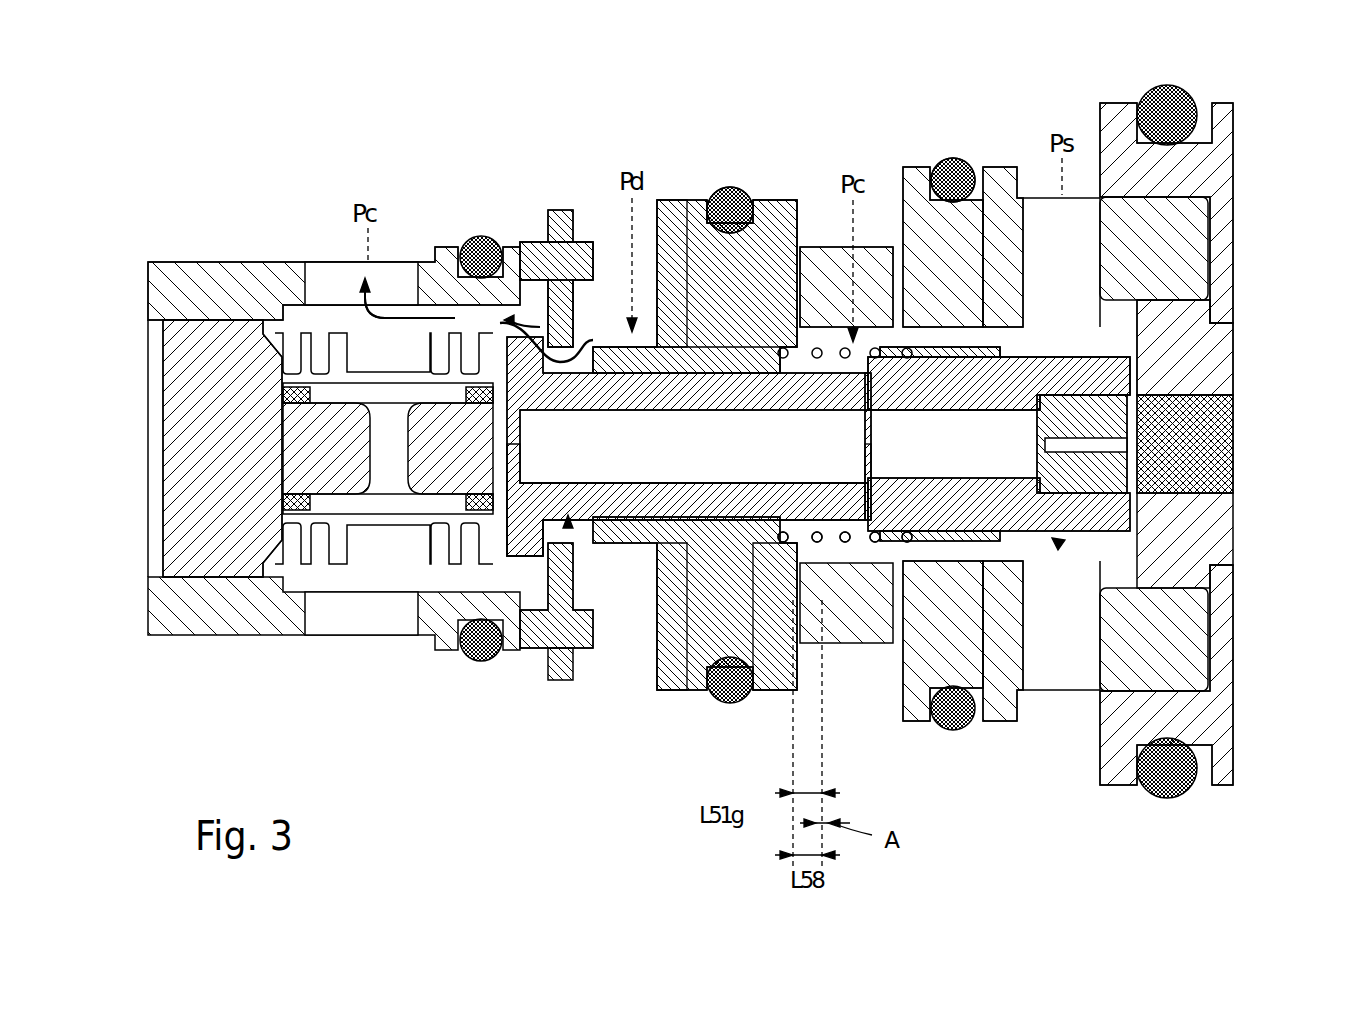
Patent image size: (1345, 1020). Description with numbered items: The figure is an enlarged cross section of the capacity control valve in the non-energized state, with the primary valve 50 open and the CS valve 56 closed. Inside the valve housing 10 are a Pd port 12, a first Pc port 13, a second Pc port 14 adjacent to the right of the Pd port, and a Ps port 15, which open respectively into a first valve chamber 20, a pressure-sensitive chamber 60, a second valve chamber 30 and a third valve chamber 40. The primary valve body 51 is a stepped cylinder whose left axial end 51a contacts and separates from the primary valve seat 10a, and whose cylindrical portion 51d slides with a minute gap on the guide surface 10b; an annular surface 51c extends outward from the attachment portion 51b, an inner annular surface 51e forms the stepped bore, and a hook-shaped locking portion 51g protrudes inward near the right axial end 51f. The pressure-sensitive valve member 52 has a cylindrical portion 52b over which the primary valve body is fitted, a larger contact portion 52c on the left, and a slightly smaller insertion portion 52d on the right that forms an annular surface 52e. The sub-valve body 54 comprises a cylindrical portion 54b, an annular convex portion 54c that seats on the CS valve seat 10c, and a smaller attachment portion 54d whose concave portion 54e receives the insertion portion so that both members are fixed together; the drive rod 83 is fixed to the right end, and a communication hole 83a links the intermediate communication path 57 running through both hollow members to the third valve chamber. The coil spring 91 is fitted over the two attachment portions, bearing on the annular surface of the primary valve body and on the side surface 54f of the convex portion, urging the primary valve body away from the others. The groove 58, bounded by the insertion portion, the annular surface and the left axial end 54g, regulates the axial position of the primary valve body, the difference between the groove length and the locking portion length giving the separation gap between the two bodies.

The valve housing 10 is at (222, 260).
The primary valve seat 10a is at (545, 240).
The guide surface 10b is at (733, 187).
The CS valve seat 10c is at (974, 178).
The Pd port 12 is at (652, 240).
The first Pc port 13 is at (263, 306).
The second Pc port 14 is at (890, 250).
The Ps port 15 is at (1040, 235).
The first valve chamber 20 is at (612, 290).
The second valve chamber 30 is at (840, 247).
The third valve chamber 40 is at (1080, 337).
The primary valve 50 is at (611, 82).
The primary valve body 51 is at (625, 610).
The left axial end 51a is at (573, 300).
The attachment portion 51b is at (785, 330).
The annular surface 51c is at (745, 300).
The cylindrical portion 51d is at (698, 300).
The annular surface 51e is at (762, 392).
The right axial end 51f is at (790, 577).
The locking portion 51g is at (735, 600).
The pressure-sensitive valve member 52 is at (560, 605).
The cylindrical portion 52b is at (660, 600).
The contact portion 52c is at (515, 558).
The insertion portion 52d is at (830, 560).
The annular surface 52e is at (873, 430).
The sub-valve body 54 is at (1050, 560).
The cylindrical portion 54b is at (1078, 570).
The annular convex portion 54c is at (960, 347).
The attachment portion 54d is at (935, 640).
The concave portion 54e is at (885, 560).
The side surface 54f is at (923, 346).
The left axial end 54g is at (833, 483).
The CS valve 56 is at (885, 80).
The intermediate communication path 57 is at (985, 570).
The groove 58 is at (800, 484).
The pressure-sensitive chamber 60 is at (410, 300).
The drive rod 83 is at (1170, 392).
The communication hole 83a is at (1140, 446).
The coil spring 91 is at (822, 610).